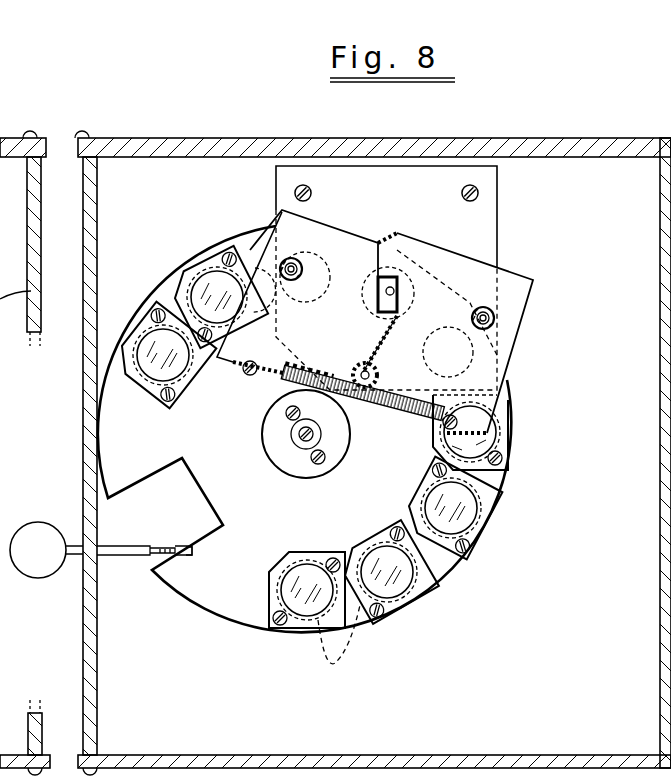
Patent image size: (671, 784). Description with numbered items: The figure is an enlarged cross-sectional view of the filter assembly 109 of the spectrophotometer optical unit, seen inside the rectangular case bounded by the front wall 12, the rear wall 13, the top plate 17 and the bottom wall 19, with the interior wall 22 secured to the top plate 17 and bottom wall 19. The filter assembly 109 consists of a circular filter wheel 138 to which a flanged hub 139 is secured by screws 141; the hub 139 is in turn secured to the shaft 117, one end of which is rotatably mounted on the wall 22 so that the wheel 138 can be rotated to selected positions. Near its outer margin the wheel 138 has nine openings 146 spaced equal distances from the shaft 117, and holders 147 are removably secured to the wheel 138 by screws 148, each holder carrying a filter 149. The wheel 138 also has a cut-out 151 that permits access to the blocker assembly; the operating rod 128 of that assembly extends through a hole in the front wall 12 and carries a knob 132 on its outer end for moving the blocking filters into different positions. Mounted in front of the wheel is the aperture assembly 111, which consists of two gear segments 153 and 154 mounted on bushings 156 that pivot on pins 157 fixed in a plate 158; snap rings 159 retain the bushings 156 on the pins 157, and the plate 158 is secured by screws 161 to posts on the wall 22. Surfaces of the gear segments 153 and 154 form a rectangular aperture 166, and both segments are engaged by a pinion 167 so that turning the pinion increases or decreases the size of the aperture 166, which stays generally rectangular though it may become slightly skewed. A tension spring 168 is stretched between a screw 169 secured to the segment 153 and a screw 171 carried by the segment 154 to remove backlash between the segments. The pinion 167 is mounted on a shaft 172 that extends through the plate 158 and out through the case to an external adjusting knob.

The front wall 12 is at (99, 656).
The rear wall 13 is at (660, 540).
The top plate 17 is at (200, 147).
The bottom wall 19 is at (446, 754).
The interior wall 22 is at (278, 715).
The filter assembly 109 is at (517, 626).
The aperture assembly 111 is at (476, 263).
The shaft 117 is at (312, 435).
The operating rod 128 is at (118, 547).
The knob 132 is at (37, 527).
The filter wheel 138 is at (288, 521).
The flanged hub 139 is at (285, 463).
The screws 141 is at (312, 457).
The openings 146 is at (339, 646).
The holders 147 is at (142, 330).
The screws 148 is at (230, 258).
The filters 149 is at (213, 290).
The cut-out 151 is at (150, 562).
The gear segment 153 is at (220, 365).
The gear segment 154 is at (487, 423).
The bushings 156 is at (300, 272).
The pins 157 is at (298, 266).
The plate 158 is at (484, 218).
The snap rings 159 is at (290, 258).
The screws 161 is at (311, 192).
The rectangular aperture 166 is at (393, 292).
The pinion 167 is at (360, 362).
The tension spring 168 is at (378, 406).
The screw 169 is at (252, 362).
The screw 171 is at (487, 430).
The shaft 172 is at (375, 375).